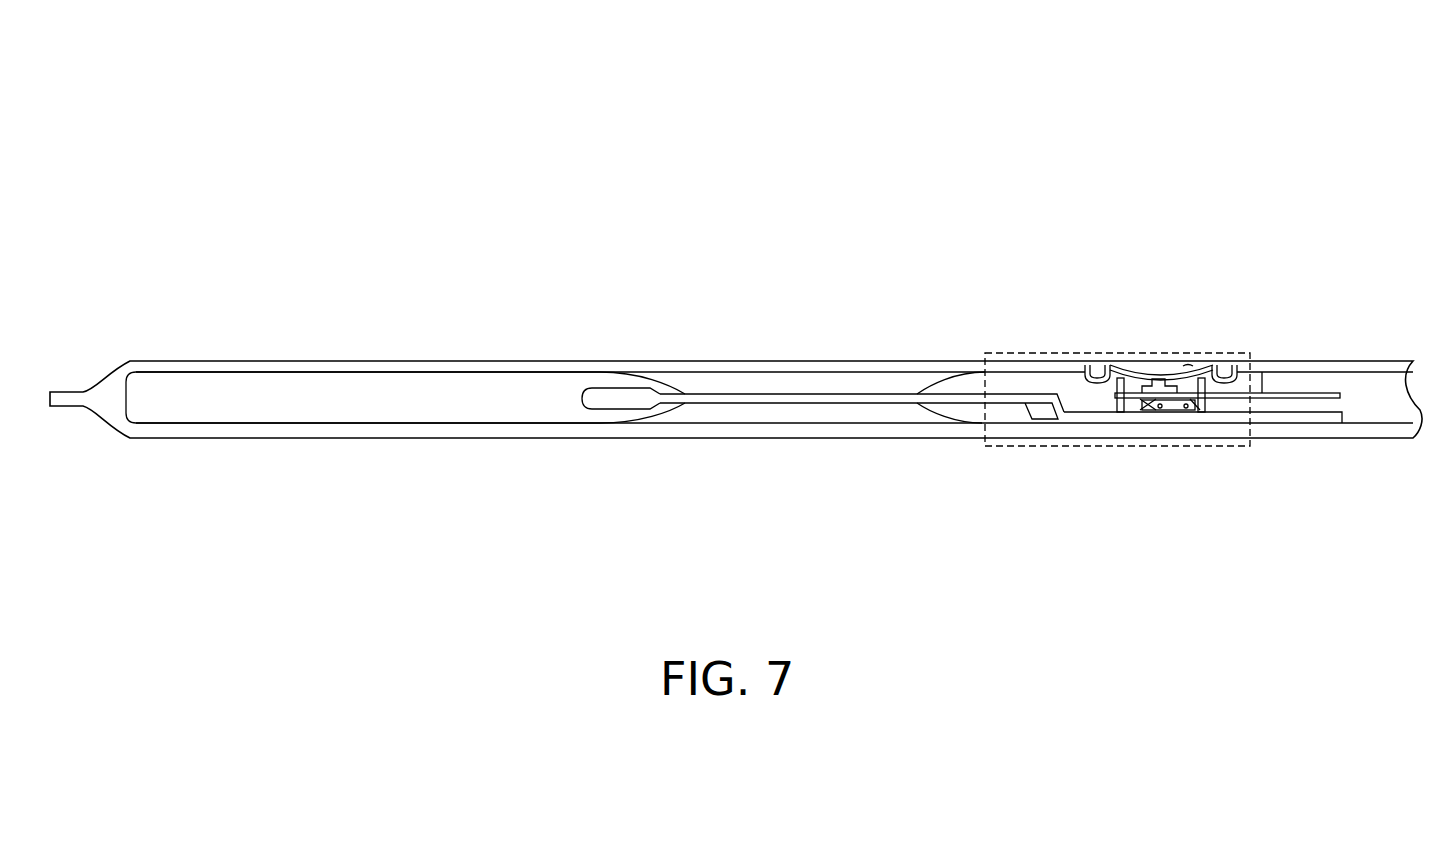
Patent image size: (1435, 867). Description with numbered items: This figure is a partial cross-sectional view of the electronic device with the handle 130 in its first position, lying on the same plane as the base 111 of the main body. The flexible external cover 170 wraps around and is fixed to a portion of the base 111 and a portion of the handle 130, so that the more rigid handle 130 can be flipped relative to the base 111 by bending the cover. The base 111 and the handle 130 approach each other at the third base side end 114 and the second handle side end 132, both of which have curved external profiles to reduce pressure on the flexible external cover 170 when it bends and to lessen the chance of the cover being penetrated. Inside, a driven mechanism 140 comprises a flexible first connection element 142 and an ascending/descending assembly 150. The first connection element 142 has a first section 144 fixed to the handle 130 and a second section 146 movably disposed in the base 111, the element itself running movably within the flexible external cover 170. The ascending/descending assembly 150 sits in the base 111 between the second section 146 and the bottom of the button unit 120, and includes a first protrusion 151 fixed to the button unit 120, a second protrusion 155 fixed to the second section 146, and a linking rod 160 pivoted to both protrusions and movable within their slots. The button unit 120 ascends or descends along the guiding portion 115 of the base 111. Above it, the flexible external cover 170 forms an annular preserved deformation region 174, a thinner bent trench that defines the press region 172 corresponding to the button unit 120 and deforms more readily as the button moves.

The base 111 is at (1040, 383).
The third base side end 114 is at (921, 381).
The guiding portion 115 is at (1120, 385).
The button unit 120 is at (1160, 378).
The handle 130 is at (410, 393).
The second handle side end 132 is at (675, 383).
The driven mechanism 140 is at (1344, 32).
The first connection element 142 is at (775, 394).
The first section 144 is at (1091, 416).
The second section 146 is at (616, 394).
The ascending/descending assembly 150 is at (1280, 78).
The first protrusion 151 is at (1150, 405).
The second protrusion 155 is at (1193, 410).
The linking rod 160 is at (1170, 413).
The flexible external cover 170 is at (833, 380).
The press region 172 is at (1187, 367).
The annular preserved deformation region 174 is at (1097, 366).